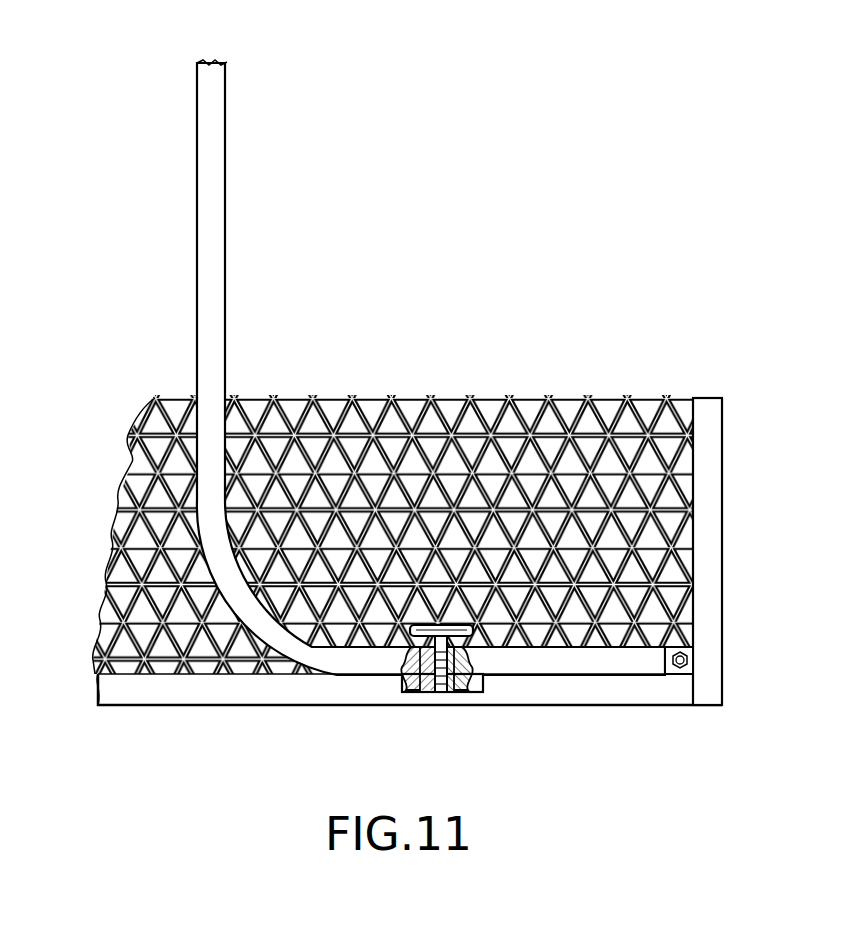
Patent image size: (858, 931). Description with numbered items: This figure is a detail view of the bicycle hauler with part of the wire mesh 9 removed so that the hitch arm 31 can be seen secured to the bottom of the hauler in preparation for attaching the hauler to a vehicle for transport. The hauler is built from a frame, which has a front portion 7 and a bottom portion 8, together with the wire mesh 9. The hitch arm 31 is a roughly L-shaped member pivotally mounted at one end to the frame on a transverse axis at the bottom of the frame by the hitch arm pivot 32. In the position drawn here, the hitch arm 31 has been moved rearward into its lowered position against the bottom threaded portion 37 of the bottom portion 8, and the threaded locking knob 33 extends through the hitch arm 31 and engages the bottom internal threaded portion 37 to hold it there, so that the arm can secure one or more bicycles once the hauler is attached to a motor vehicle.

The front portion 7 is at (710, 497).
The bottom portion 8 is at (180, 706).
The wire mesh 9 is at (451, 470).
The hitch arm 31 is at (197, 157).
The hitch arm pivot 32 is at (692, 658).
The threaded locking knob 33 is at (472, 633).
The bottom threaded portion 37 is at (441, 694).